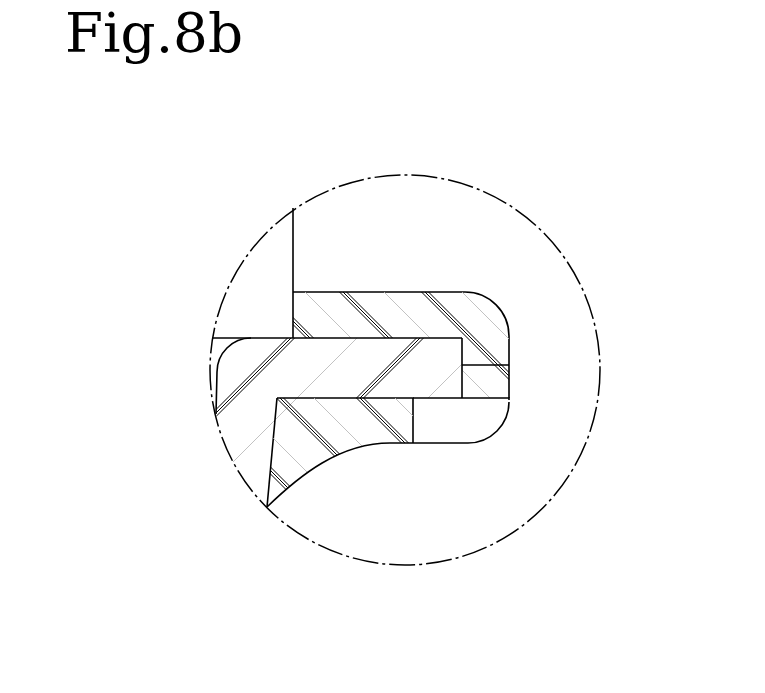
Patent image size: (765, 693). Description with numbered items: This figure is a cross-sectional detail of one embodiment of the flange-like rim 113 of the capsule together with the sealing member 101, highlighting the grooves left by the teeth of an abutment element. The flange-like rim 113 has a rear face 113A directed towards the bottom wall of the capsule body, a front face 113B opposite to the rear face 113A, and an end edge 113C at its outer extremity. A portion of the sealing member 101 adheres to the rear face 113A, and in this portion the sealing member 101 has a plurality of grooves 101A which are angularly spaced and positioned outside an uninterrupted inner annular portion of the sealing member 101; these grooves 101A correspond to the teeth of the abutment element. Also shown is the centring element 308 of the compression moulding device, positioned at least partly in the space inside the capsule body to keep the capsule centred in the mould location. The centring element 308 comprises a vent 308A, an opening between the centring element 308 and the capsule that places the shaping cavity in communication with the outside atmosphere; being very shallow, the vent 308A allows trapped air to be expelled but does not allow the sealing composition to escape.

The centring element 308 is at (268, 300).
The vent 308A is at (255, 338).
The flange-like rim 113 is at (366, 354).
The rear face 113A is at (321, 421).
The front face 113B is at (331, 338).
The end edge 113C is at (509, 365).
The sealing member 101 is at (430, 315).
The grooves 101A is at (473, 423).